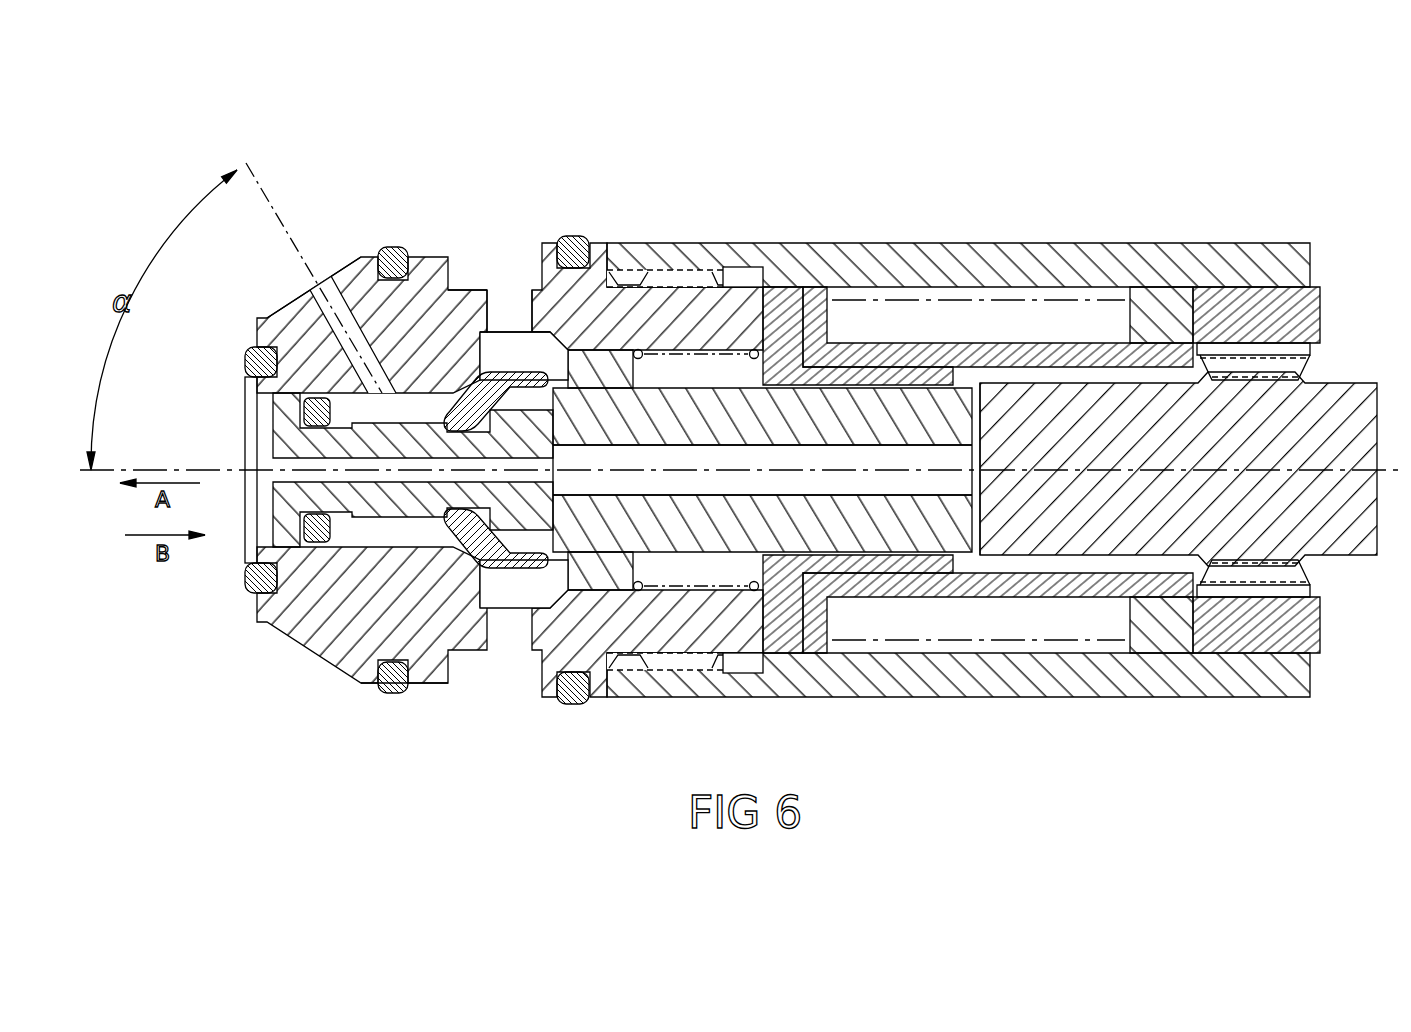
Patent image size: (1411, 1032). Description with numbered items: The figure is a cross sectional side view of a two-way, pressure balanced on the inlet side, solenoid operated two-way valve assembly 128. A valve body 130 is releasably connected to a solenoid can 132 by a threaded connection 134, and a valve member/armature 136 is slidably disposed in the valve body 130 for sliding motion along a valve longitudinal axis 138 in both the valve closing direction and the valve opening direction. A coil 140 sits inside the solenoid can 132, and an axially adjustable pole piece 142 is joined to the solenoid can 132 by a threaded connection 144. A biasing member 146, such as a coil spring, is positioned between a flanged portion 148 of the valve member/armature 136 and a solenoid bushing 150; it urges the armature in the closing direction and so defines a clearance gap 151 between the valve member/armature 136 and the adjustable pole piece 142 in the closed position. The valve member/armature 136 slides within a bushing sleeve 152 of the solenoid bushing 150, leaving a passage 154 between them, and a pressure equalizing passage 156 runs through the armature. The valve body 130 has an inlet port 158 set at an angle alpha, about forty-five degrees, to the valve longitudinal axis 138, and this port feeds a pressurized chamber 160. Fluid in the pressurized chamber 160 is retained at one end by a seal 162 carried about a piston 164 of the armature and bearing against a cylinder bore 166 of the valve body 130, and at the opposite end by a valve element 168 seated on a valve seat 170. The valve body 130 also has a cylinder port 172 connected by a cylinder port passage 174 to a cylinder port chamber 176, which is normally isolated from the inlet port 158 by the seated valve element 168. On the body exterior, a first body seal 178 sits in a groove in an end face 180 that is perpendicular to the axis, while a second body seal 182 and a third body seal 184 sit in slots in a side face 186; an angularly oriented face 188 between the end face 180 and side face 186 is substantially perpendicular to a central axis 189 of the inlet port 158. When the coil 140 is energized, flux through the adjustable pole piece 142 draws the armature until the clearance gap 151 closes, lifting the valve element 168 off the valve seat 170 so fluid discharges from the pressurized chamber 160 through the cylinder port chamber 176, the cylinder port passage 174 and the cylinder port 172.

The two-way valve assembly 128 is at (905, 178).
The valve body 130 is at (304, 300).
The solenoid can 132 is at (1240, 258).
The threaded connection 134 is at (675, 262).
The valve member/armature 136 is at (905, 535).
The valve longitudinal axis 138 is at (108, 462).
The coil 140 is at (1165, 295).
The axially adjustable pole piece 142 is at (1325, 400).
The threaded connection 144 is at (1305, 365).
The biasing member 146 is at (697, 590).
The flanged portion 148 is at (605, 605).
The solenoid bushing 150 is at (775, 652).
The clearance gap 151 is at (985, 525).
The bushing sleeve 152 is at (870, 560).
The passage 154 is at (960, 380).
The pressure equalizing passage 156 is at (868, 450).
The inlet port 158 is at (329, 281).
The pressurized chamber 160 is at (367, 529).
The seal 162 is at (300, 532).
The piston 164 is at (290, 492).
The cylinder bore 166 is at (262, 395).
The valve element 168 is at (552, 405).
The valve seat 170 is at (437, 288).
The cylinder port 172 is at (467, 268).
The cylinder port passage 174 is at (493, 294).
The cylinder port chamber 176 is at (508, 344).
The first body seal 178 is at (248, 590).
The end face 180 is at (255, 384).
The second body seal 182 is at (396, 685).
The third body seal 184 is at (583, 705).
The side face 186 is at (427, 688).
The angularly oriented face 188 is at (286, 306).
The central axis 189 is at (272, 178).